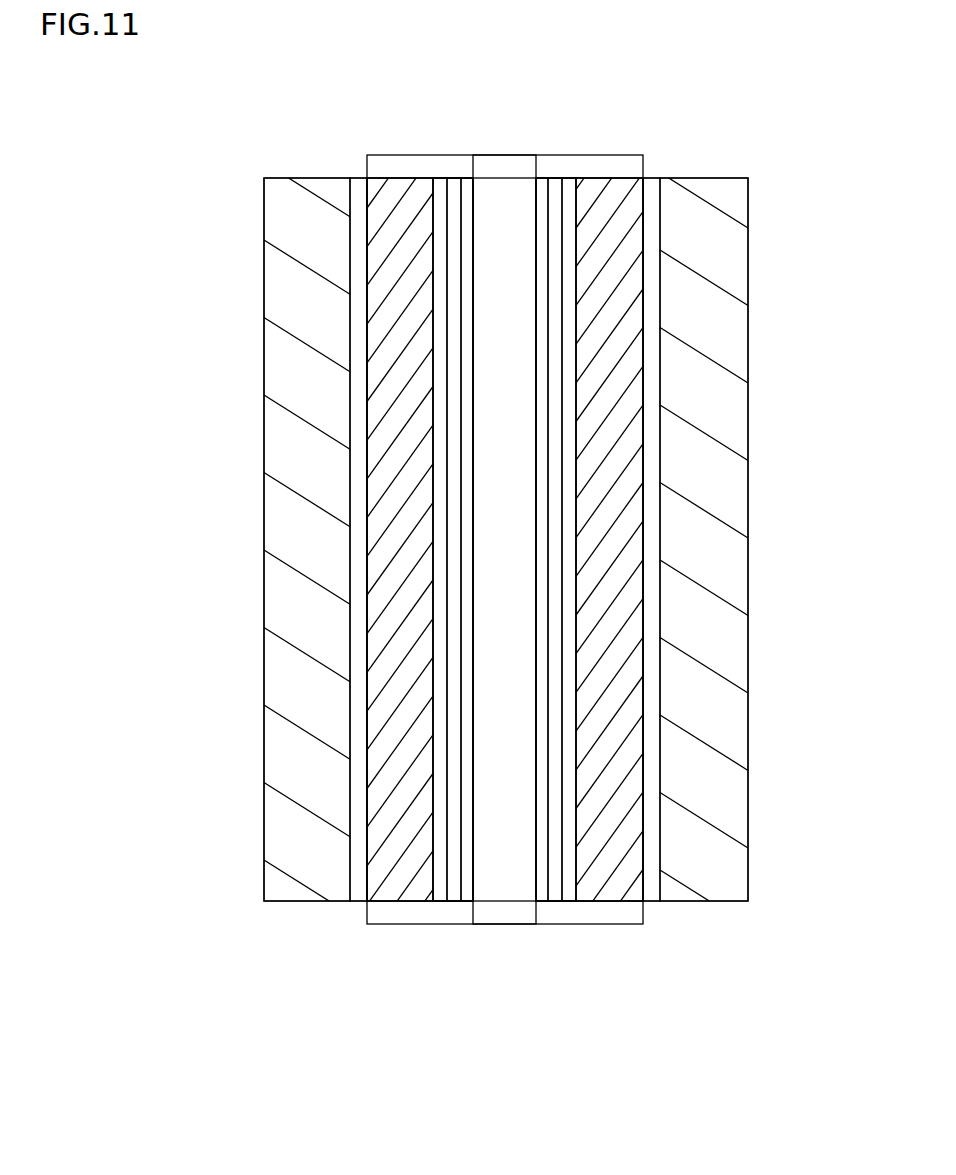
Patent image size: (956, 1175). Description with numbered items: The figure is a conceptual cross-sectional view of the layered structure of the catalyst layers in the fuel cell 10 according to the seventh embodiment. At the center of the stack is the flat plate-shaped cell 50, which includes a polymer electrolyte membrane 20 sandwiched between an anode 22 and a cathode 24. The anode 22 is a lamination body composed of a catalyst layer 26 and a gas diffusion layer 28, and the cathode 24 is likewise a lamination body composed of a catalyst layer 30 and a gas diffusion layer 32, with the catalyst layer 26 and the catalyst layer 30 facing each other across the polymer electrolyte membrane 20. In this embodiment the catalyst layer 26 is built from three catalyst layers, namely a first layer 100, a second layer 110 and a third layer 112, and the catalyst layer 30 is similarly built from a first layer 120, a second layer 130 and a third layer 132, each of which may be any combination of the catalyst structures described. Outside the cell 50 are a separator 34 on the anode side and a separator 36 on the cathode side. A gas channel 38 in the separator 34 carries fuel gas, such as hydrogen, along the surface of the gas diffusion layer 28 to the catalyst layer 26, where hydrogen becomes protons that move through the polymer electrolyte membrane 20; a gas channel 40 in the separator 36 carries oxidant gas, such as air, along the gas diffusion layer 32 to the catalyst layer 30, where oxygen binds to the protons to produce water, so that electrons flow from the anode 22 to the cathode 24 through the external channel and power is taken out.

The fuel cell 10 is at (497, 1125).
The polymer electrolyte membrane 20 is at (512, 925).
The anode 22 is at (476, 902).
The cathode 24 is at (538, 902).
The catalyst layer 26 is at (457, 902).
The gas diffusion layer 28 is at (369, 1027).
The catalyst layer 30 is at (562, 902).
The gas diffusion layer 32 is at (646, 1027).
The separator 34 is at (308, 902).
The separator 36 is at (722, 902).
The gas channel 38 is at (355, 178).
The gas channel 40 is at (650, 178).
The cell 50 is at (646, 1019).
The first layer 100 is at (466, 178).
The second layer 110 is at (453, 178).
The third layer 112 is at (439, 178).
The first layer 120 is at (541, 178).
The second layer 130 is at (556, 178).
The third layer 132 is at (570, 178).